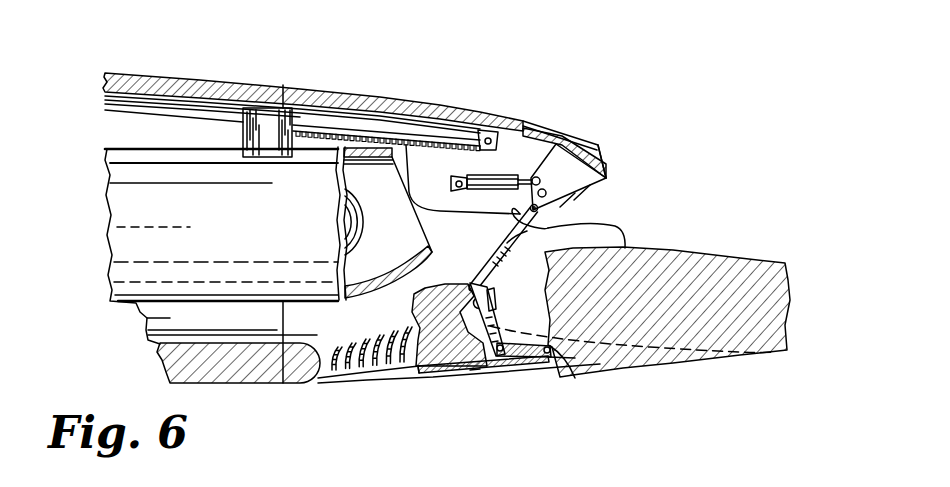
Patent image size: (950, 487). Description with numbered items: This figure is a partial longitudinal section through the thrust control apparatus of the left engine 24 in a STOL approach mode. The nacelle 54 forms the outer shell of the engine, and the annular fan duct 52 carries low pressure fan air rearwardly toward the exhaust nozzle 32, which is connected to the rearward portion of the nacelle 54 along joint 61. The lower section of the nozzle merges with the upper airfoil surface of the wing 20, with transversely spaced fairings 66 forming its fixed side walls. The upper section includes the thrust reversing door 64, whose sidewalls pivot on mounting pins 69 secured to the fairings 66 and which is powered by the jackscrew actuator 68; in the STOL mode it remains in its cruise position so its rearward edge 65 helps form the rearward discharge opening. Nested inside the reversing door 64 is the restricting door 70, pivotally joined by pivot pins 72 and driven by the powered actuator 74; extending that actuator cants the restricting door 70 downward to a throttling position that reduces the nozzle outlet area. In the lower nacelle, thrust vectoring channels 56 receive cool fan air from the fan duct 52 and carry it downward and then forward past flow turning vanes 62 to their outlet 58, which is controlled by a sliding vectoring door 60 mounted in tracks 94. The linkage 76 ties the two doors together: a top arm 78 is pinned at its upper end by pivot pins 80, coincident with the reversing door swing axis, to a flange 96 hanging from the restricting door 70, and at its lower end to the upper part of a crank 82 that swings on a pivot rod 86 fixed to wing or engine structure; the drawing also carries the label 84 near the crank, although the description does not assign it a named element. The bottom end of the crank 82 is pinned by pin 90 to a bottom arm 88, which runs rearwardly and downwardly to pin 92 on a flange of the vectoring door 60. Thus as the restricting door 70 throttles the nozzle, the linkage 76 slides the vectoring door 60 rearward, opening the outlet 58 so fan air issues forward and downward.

The wing 20 is at (750, 272).
The left engine 24 is at (208, 68).
The exhaust nozzle 32 is at (622, 182).
The annular fan duct 52 is at (137, 129).
The nacelle 54 is at (123, 77).
The thrust vectoring channels 56 is at (397, 382).
The outlet 58 is at (363, 370).
The vectoring door 60 is at (448, 375).
The joint 61 is at (290, 85).
The flow turning vanes 62 is at (337, 372).
The thrust reversing door 64 is at (450, 158).
The rearward edge 65 is at (574, 200).
The fairings 66 is at (627, 230).
The actuator 68 is at (365, 128).
The mounting pins 69 is at (565, 212).
The restricting door 70 is at (610, 168).
The pivot pins 72 is at (545, 191).
The powered actuator 74 is at (497, 176).
The linkage 76 is at (474, 246).
The top arm 78 is at (507, 243).
The pivot pins 80 is at (545, 213).
The crank 82 is at (490, 320).
The bell crank 84 is at (498, 297).
The pivot rod 86 is at (450, 303).
The bottom arm 88 is at (522, 358).
The pin 90 is at (500, 372).
The pin 92 is at (568, 362).
The tracks 94 is at (475, 374).
The flange 96 is at (508, 214).